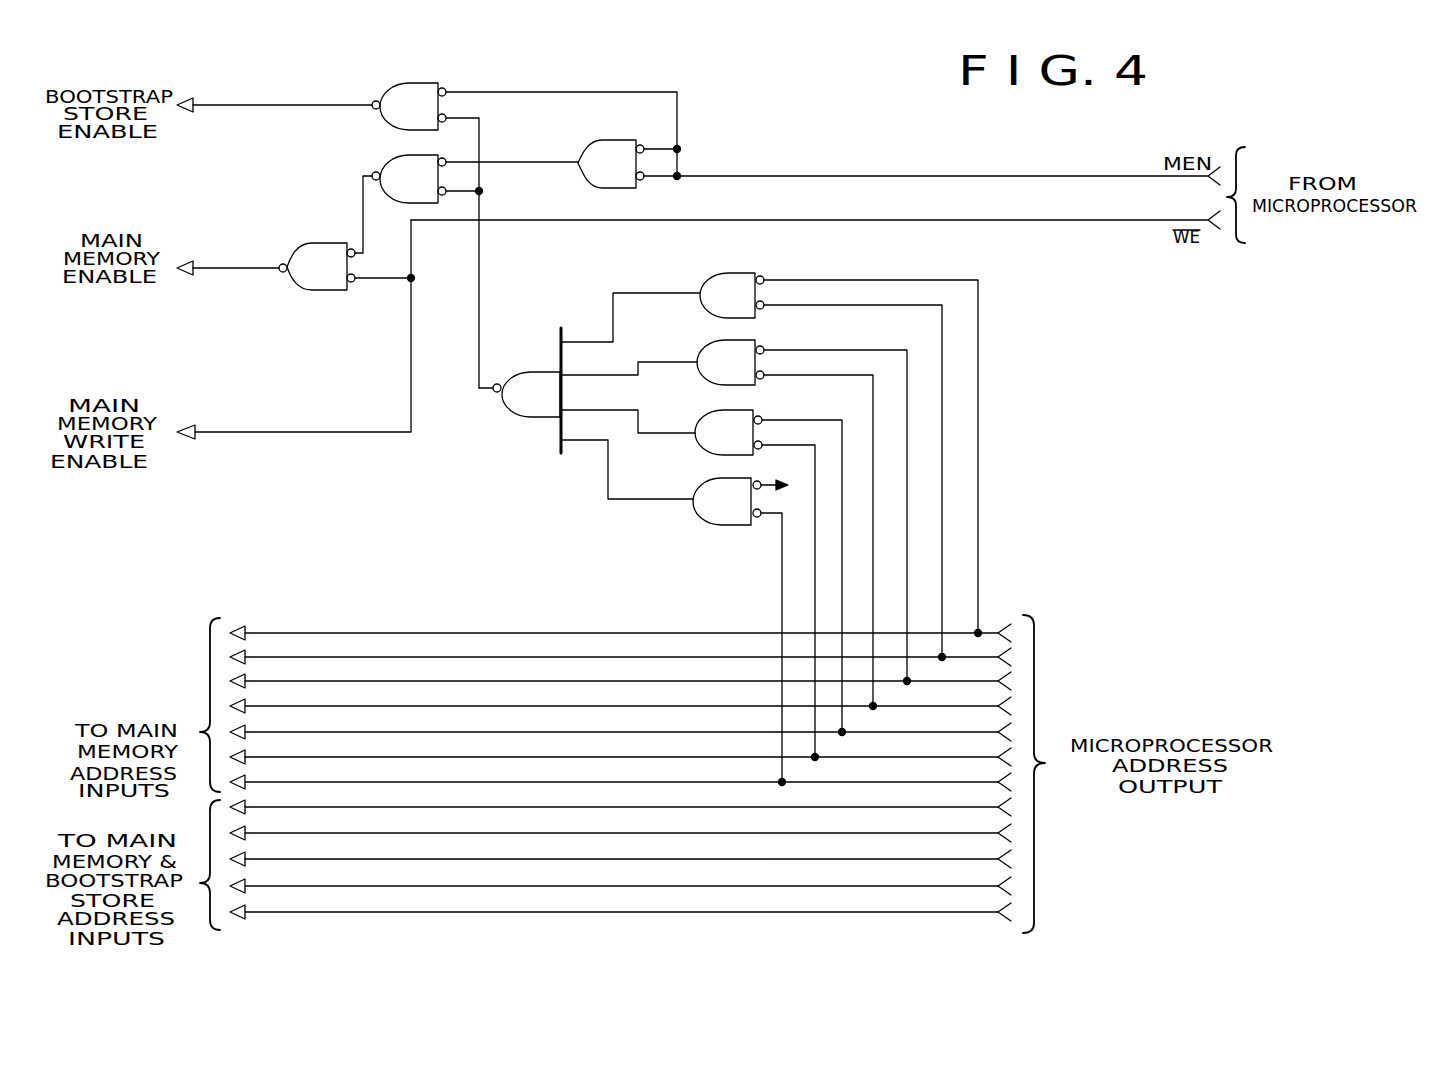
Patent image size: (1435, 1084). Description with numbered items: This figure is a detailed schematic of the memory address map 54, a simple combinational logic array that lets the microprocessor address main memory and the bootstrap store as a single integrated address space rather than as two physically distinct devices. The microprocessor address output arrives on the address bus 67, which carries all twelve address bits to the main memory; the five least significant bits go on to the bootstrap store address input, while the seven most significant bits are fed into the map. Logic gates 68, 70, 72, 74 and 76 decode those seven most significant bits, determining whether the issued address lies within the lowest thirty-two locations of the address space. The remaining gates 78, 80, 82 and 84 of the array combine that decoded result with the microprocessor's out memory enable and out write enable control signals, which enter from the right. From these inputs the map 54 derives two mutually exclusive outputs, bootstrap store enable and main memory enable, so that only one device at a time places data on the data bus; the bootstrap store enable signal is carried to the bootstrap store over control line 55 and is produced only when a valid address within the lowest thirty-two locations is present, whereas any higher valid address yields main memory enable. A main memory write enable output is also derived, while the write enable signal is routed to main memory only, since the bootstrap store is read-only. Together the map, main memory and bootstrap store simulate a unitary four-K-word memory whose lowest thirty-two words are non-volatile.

The memory address map 54 is at (1078, 420).
The control line 55 is at (297, 102).
The address bus 67 is at (500, 615).
The logic gate 68 is at (724, 274).
The logic gate 70 is at (715, 340).
The logic gate 72 is at (707, 411).
The logic gate 74 is at (713, 479).
The logic gate 76 is at (527, 368).
The NOR gate 78 is at (615, 137).
The NAND gate 80 is at (432, 65).
The NAND gate 82 is at (388, 155).
The NOR gate 84 is at (310, 290).